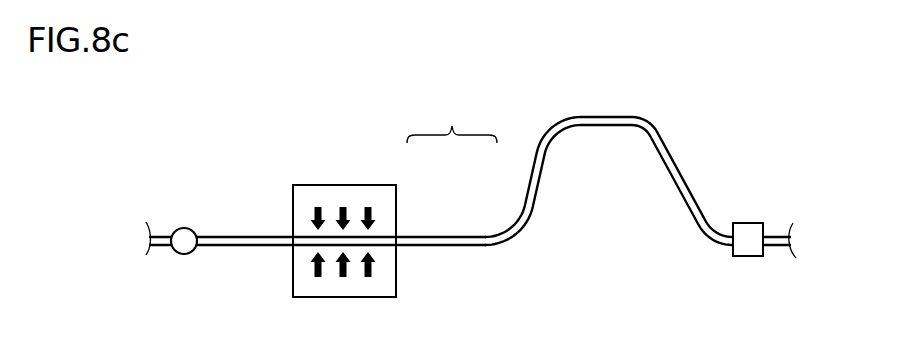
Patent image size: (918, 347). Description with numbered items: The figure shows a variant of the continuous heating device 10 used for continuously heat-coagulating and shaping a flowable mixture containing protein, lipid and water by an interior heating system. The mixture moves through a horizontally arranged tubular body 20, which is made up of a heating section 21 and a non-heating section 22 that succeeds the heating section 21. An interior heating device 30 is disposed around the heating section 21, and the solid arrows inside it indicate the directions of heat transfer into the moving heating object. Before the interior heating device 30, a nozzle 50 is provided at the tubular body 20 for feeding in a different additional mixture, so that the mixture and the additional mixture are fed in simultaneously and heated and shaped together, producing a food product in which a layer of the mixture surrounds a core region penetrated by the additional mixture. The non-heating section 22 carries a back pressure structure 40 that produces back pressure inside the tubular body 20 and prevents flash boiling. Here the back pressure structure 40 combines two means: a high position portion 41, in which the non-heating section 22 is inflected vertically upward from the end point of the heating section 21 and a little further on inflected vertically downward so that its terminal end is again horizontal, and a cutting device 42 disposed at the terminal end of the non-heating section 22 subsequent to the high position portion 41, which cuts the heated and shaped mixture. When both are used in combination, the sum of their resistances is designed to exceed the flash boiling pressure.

The continuous heating device 10 is at (722, 110).
The tubular body 20 is at (452, 118).
The heating section 21 is at (381, 240).
The non-heating section 22 is at (462, 237).
The interior heating device 30 is at (302, 185).
The back pressure structure 40 is at (638, 151).
The high position portion 41 is at (600, 121).
The cutting device 42 is at (746, 223).
The nozzle 50 is at (184, 228).